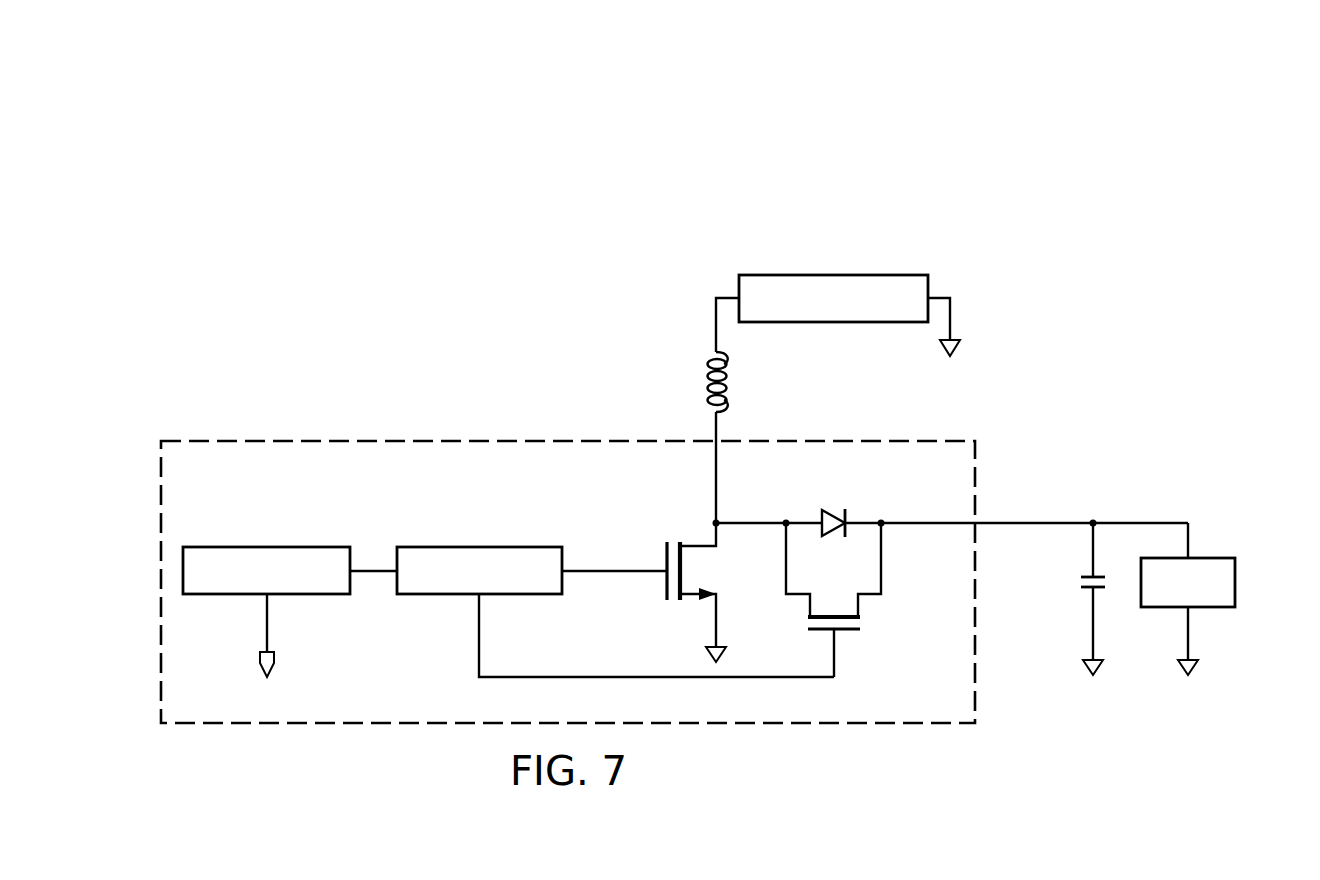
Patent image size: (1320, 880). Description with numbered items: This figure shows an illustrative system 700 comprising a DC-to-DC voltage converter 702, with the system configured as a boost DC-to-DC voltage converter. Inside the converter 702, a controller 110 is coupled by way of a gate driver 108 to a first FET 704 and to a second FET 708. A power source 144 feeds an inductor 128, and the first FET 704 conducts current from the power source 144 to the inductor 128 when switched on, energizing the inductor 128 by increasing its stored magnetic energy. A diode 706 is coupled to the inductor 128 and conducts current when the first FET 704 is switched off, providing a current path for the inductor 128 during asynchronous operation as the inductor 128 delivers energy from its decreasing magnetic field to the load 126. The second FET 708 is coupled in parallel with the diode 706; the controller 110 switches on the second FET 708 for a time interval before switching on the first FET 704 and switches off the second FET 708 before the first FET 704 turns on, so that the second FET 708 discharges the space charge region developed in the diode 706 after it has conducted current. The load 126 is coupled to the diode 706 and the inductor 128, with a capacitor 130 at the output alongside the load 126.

The system 700 is at (284, 164).
The DC-to-DC voltage converter 702 is at (395, 436).
The power source 144 is at (833, 275).
The inductor 128 is at (727, 383).
The controller 110 is at (243, 547).
The gate driver 108 is at (457, 547).
The first FET 704 is at (665, 561).
The diode 706 is at (836, 513).
The second FET 708 is at (845, 632).
The capacitor 130 is at (1080, 582).
The load 126 is at (1237, 578).